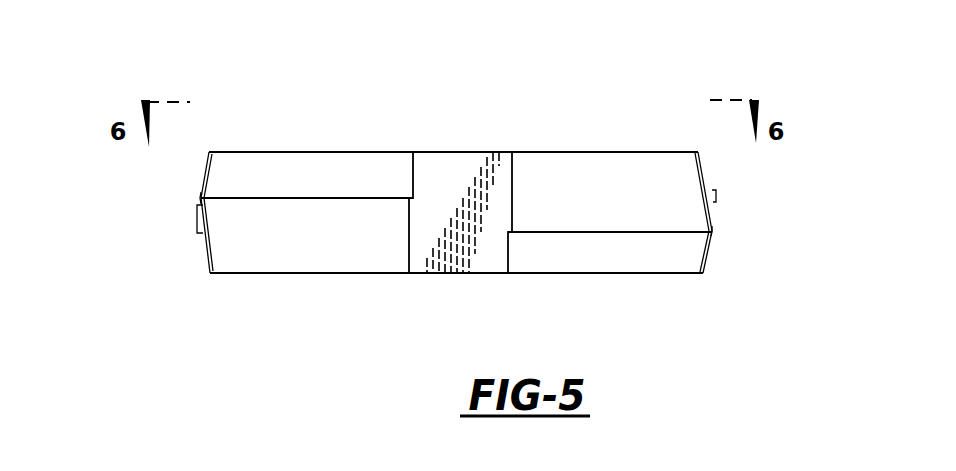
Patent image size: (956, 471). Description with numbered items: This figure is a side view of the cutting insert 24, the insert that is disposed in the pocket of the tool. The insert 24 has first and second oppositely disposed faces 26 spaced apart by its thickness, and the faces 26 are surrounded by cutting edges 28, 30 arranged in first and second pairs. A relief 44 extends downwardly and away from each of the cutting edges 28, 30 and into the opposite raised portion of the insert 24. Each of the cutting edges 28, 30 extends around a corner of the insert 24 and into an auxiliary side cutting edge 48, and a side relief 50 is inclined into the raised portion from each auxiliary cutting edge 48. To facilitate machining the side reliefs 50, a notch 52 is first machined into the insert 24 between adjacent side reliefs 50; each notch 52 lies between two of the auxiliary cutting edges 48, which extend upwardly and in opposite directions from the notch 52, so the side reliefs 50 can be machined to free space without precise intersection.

The cutting insert 24 is at (484, 138).
The face 26 is at (553, 228).
The first cutting edge 28 is at (200, 197).
The second cutting edge 30 is at (197, 233).
The relief 44 is at (207, 150).
The auxiliary side cutting edge 48 is at (300, 197).
The side relief 50 is at (597, 160).
The notch 52 is at (437, 157).